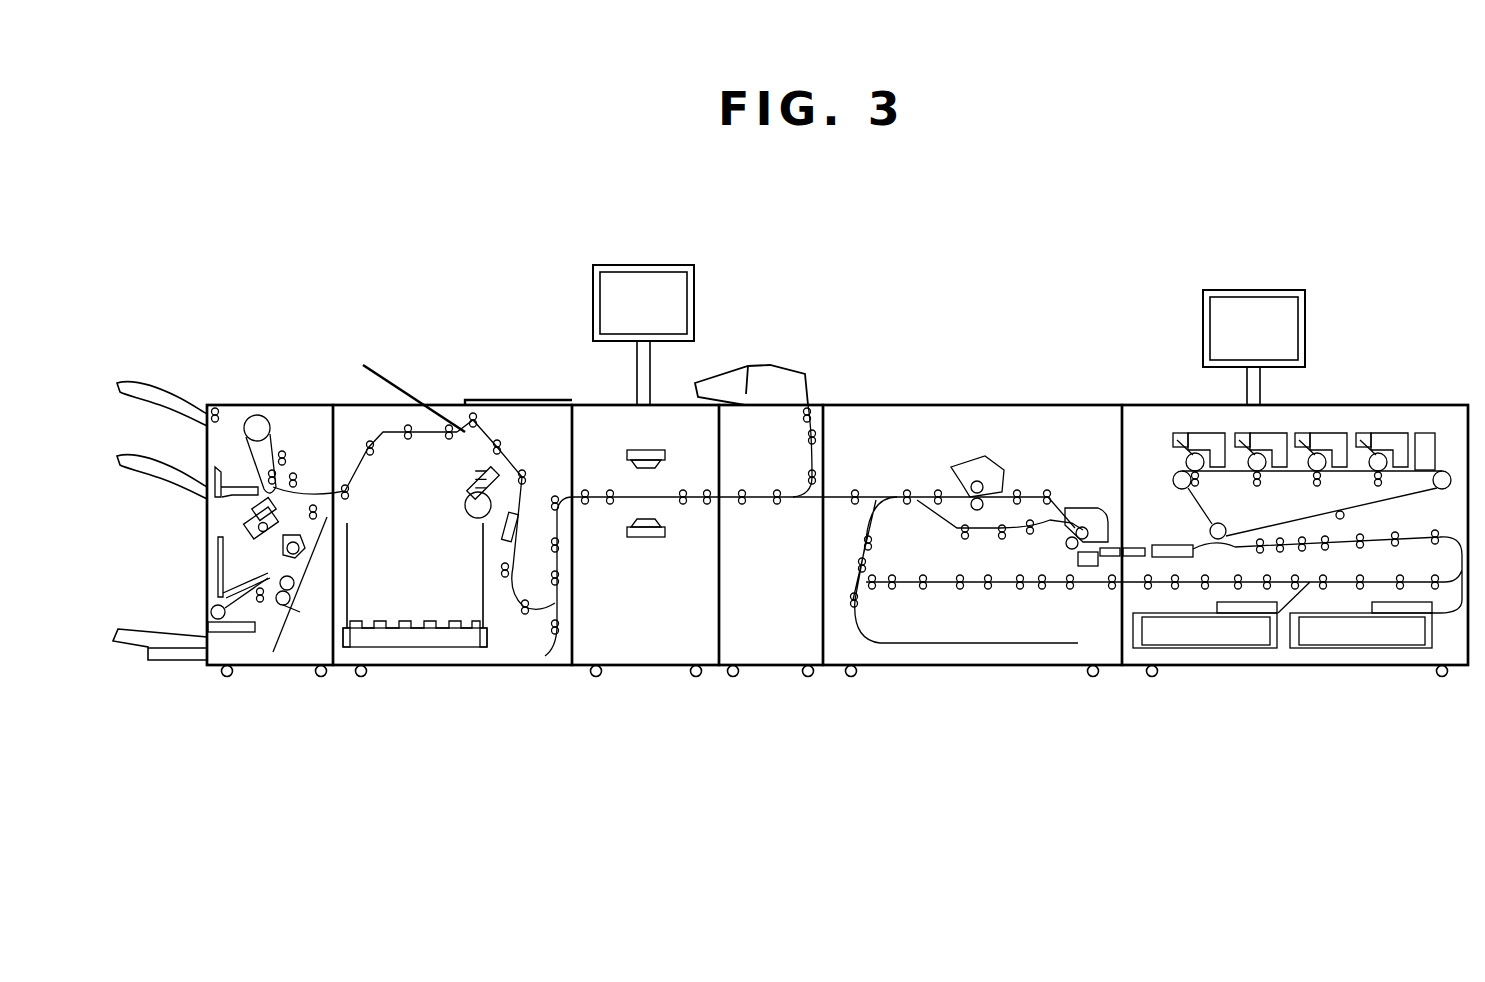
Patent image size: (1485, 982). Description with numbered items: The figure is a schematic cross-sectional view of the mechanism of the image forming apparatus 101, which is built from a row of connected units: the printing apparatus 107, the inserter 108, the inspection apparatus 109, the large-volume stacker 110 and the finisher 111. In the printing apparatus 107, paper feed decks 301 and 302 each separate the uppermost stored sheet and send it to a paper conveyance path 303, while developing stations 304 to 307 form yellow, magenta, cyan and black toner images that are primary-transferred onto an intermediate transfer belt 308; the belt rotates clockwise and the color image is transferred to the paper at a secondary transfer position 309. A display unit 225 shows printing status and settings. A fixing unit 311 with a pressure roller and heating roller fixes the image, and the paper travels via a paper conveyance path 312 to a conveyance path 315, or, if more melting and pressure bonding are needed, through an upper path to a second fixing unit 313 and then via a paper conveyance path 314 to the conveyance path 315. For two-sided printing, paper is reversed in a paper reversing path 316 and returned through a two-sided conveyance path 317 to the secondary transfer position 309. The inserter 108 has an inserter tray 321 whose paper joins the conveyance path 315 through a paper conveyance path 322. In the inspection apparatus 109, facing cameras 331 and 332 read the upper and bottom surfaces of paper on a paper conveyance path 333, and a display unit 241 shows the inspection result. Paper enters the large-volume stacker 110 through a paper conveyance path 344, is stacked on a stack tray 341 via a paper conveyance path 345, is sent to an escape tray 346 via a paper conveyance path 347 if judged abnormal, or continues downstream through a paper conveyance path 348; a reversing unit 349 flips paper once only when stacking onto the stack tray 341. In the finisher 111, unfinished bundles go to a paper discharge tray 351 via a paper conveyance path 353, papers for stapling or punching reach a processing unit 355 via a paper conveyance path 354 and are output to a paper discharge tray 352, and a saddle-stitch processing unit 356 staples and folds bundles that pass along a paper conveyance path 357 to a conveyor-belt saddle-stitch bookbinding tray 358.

The image forming apparatus 101 is at (1073, 238).
The printing apparatus 107 is at (971, 668).
The inserter 108 is at (770, 668).
The inspection apparatus 109 is at (643, 668).
The large-volume stacker 110 is at (458, 668).
The finisher 111 is at (278, 670).
The display unit 225 is at (1254, 288).
The display unit 241 is at (647, 263).
The paper feed deck 301 is at (1240, 648).
The paper feed deck 302 is at (1390, 648).
The paper conveyance path 303 is at (1432, 540).
The developing station 304 is at (1392, 430).
The developing station 305 is at (1337, 430).
The developing station 306 is at (1278, 430).
The developing station 307 is at (1203, 430).
The intermediate transfer belt 308 is at (1266, 526).
The secondary transfer position 309 is at (1208, 530).
The fixing unit 311 is at (1090, 508).
The paper conveyance path 312 is at (936, 519).
The second fixing unit 313 is at (968, 462).
The paper conveyance path 314 is at (927, 494).
The conveyance path 315 is at (843, 494).
The paper reversing path 316 is at (920, 643).
The two-sided conveyance path 317 is at (1080, 587).
The inserter tray 321 is at (721, 380).
The paper conveyance path 322 is at (805, 466).
The camera 331 is at (650, 451).
The camera 332 is at (652, 539).
The paper conveyance path 333 is at (625, 495).
The stack tray 341 is at (408, 612).
The paper conveyance path 344 is at (503, 597).
The paper conveyance path 345 is at (493, 468).
The escape tray 346 is at (420, 396).
The paper conveyance path 347 is at (484, 422).
The paper conveyance path 348 is at (377, 427).
The reversing unit 349 is at (545, 656).
The paper discharge tray 351 is at (140, 380).
The paper discharge tray 352 is at (124, 454).
The paper conveyance path 353 is at (236, 410).
The paper conveyance path 354 is at (243, 462).
The processing unit 355 is at (255, 520).
The saddle-stitch processing unit 356 is at (303, 608).
The paper conveyance path 357 is at (227, 632).
The saddle-stitch bookbinding tray 358 is at (144, 630).